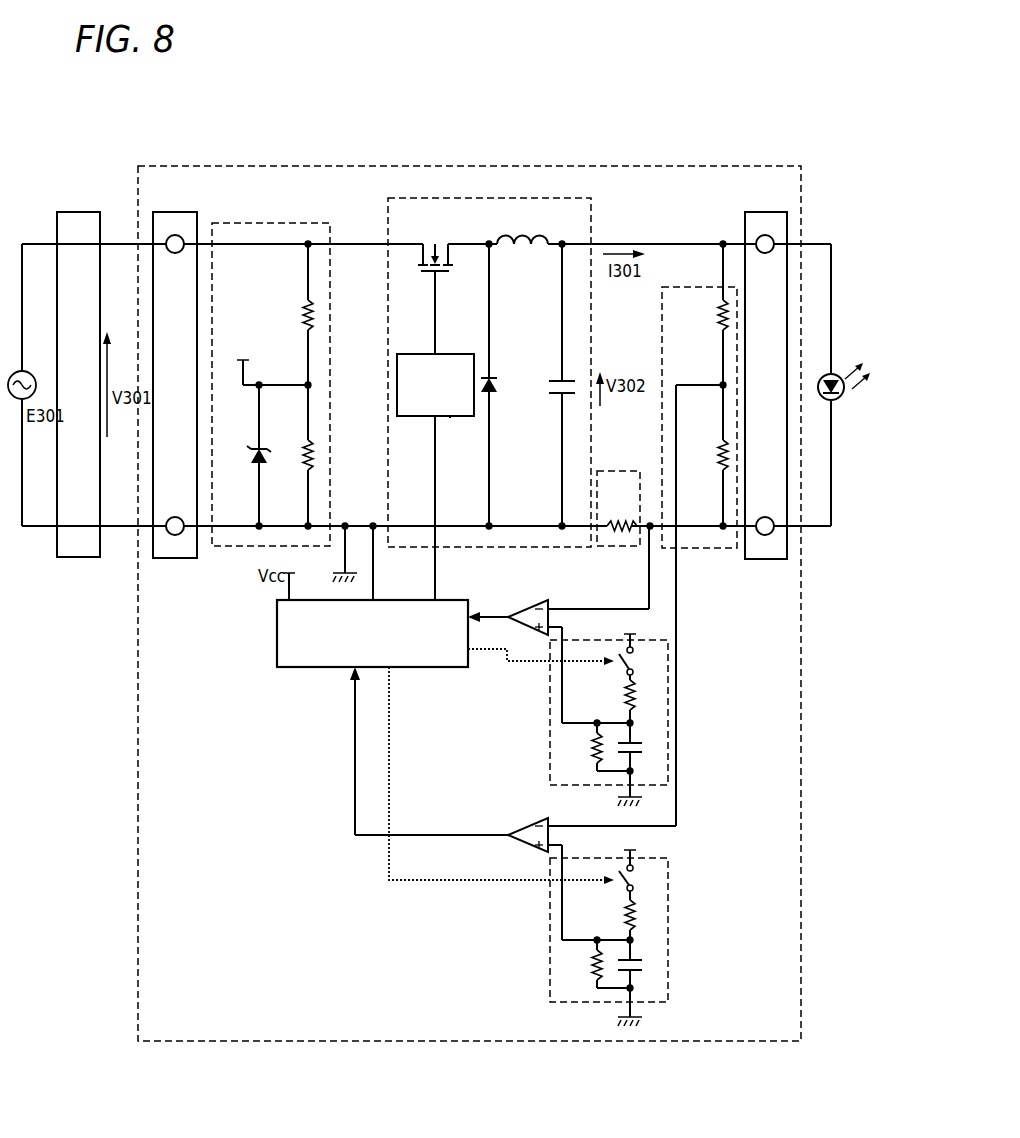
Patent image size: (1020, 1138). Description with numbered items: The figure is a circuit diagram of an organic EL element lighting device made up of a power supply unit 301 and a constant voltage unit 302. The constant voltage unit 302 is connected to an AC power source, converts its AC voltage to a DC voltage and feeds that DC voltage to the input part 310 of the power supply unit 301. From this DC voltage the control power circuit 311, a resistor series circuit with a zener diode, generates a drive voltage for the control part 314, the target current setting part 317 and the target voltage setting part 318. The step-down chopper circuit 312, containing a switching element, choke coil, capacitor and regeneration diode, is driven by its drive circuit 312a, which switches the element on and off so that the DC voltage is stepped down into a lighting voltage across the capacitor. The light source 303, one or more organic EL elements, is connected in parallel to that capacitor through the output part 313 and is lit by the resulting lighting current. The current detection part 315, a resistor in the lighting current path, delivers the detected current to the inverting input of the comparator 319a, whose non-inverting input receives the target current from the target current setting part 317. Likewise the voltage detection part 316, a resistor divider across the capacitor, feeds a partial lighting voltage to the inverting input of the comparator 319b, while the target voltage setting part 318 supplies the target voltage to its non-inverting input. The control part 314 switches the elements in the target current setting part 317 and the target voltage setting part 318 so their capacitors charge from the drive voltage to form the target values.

The power supply unit 301 is at (281, 166).
The constant voltage unit 302 is at (84, 216).
The light source 303 is at (846, 391).
The input part 310 is at (184, 214).
The control power circuit 311 is at (297, 222).
The step-down chopper circuit 312 is at (557, 196).
The drive circuit 312a is at (453, 419).
The output part 313 is at (768, 220).
The control part 314 is at (288, 639).
The current detection part 315 is at (620, 470).
The voltage detection part 316 is at (685, 287).
The target current setting part 317 is at (549, 707).
The target voltage setting part 318 is at (549, 925).
The comparator 319a is at (530, 605).
The comparator 319b is at (530, 823).